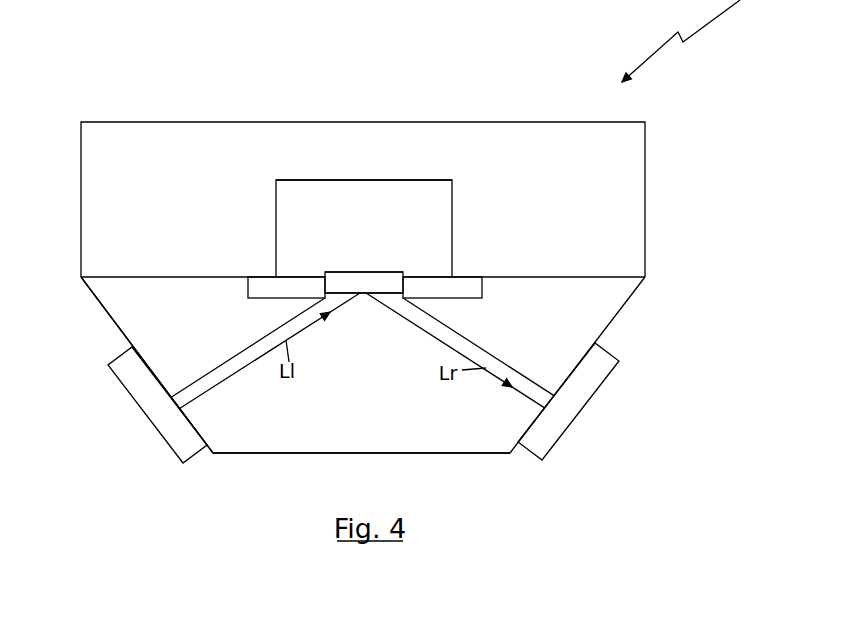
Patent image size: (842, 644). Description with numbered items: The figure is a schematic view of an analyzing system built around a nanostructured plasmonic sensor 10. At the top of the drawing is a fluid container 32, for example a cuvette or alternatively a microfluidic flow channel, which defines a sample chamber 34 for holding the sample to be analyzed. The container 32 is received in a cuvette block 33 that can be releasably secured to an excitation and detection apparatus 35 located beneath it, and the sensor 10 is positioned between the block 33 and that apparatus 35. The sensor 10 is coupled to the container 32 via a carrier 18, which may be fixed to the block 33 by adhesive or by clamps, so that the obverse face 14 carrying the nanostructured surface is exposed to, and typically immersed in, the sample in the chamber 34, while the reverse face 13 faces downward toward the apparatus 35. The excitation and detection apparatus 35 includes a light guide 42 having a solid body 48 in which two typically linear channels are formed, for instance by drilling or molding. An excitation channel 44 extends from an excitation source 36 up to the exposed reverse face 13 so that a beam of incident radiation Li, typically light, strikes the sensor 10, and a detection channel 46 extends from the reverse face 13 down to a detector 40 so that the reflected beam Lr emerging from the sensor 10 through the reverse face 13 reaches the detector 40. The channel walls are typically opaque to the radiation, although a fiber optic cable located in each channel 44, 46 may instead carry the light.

The nanostructured plasmonic sensor 10 is at (386, 266).
The reverse face 13 is at (362, 296).
The obverse face 14 is at (342, 271).
The carrier 18 is at (250, 287).
The fluid container 32 is at (400, 178).
The cuvette block 33 is at (543, 200).
The sample chamber 34 is at (356, 225).
The excitation and detection apparatus 35 is at (257, 457).
The excitation source 36 is at (143, 398).
The detector 40 is at (582, 397).
The light guide 42 is at (114, 322).
The excitation channel 44 is at (254, 344).
The detection channel 46 is at (470, 341).
The solid body 48 is at (350, 435).